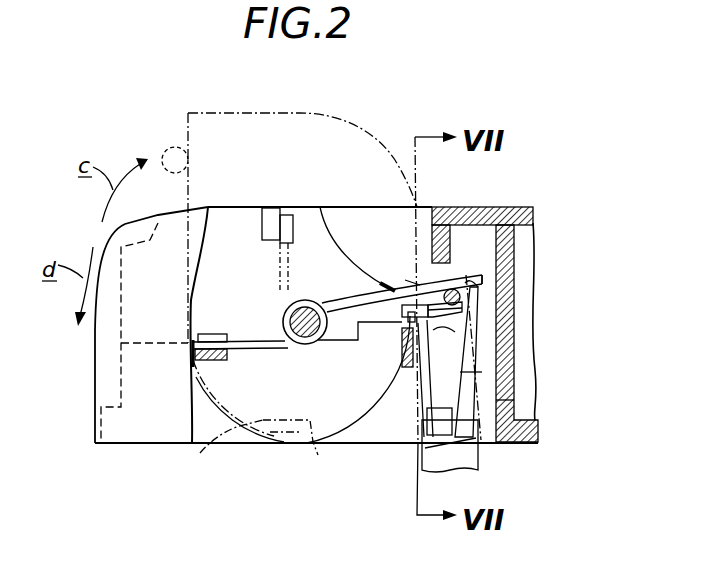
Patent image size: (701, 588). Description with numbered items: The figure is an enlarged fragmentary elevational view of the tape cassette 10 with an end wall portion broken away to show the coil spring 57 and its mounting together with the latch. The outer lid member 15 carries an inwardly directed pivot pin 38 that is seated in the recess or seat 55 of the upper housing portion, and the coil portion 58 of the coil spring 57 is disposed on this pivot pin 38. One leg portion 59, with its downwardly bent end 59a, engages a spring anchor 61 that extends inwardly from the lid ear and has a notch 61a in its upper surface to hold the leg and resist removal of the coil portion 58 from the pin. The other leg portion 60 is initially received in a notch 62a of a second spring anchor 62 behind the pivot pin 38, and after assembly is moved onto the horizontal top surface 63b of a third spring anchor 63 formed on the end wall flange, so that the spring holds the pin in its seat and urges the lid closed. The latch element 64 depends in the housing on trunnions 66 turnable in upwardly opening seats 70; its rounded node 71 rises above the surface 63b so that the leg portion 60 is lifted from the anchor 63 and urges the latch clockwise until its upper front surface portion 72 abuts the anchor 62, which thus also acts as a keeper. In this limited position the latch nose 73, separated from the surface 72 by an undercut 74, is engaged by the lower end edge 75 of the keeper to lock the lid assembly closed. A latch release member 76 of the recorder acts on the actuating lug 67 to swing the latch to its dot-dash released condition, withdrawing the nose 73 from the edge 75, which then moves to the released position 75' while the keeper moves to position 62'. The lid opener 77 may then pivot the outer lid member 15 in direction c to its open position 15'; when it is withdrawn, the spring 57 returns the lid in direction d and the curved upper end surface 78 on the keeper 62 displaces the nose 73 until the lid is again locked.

The tape cassette 10 is at (532, 156).
The outer lid member 15 is at (127, 325).
The open position of outer lid member 15' is at (302, 200).
The lid opener 77 is at (166, 147).
The pivot pin 38 is at (283, 313).
The coil portion 58 is at (305, 300).
The recess or seat 55 is at (325, 307).
The coil spring 57 is at (299, 355).
The leg portion 59 is at (257, 349).
The downwardly bent end 59a is at (190, 365).
The spring anchor 61 is at (197, 352).
The notch or recess 61a is at (253, 316).
The second spring anchor 62 is at (357, 356).
The notch or recess 62a is at (430, 325).
The released position of anchor 62' is at (266, 456).
The third spring anchor 63 is at (387, 286).
The horizontal top surface 63b is at (412, 283).
The trunnions or pivot pins 66 is at (463, 267).
The leg portion 60 is at (505, 238).
The rounded abutment or node 71 is at (483, 276).
The seats 70 is at (478, 290).
The upper front surface portion 72 is at (430, 308).
The latch element 64 is at (484, 350).
The undercut 74 is at (470, 372).
The actuating lug 67 is at (500, 412).
The latch release member 76 is at (465, 462).
The latch nose 73 is at (405, 380).
The curved upper end surface 78 is at (317, 465).
The lower end edge 75 is at (358, 379).
The released position of lower end edge 75' is at (218, 453).